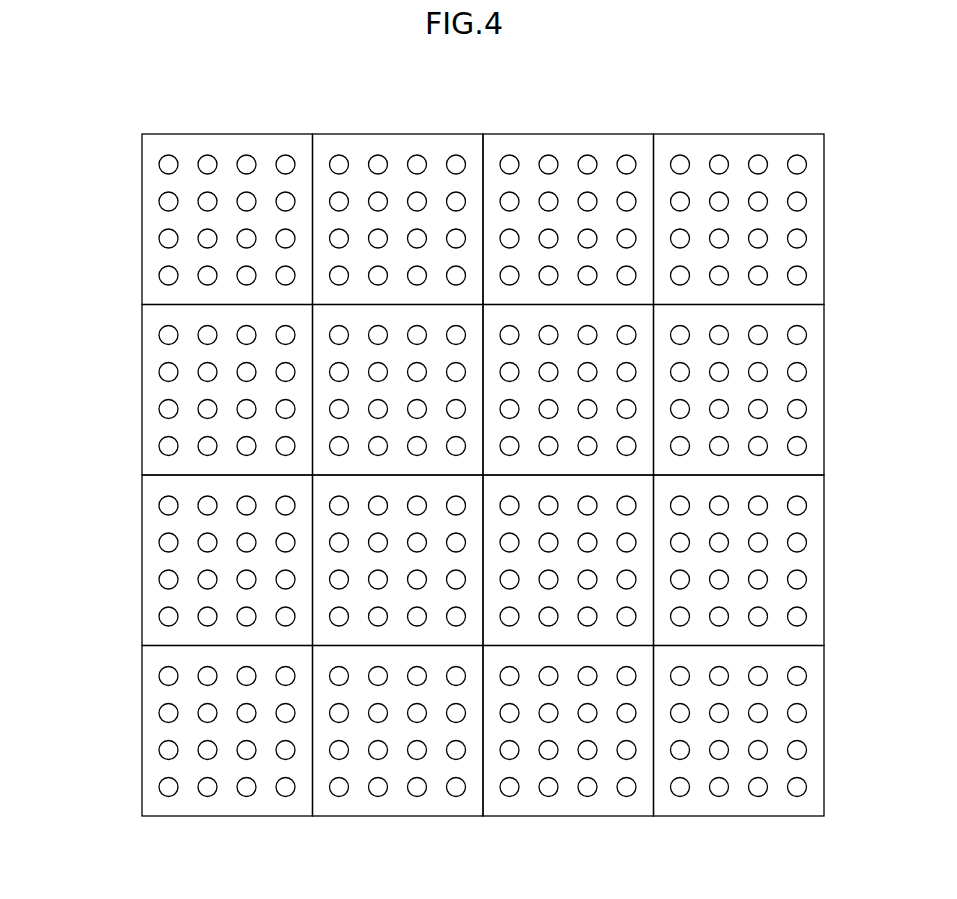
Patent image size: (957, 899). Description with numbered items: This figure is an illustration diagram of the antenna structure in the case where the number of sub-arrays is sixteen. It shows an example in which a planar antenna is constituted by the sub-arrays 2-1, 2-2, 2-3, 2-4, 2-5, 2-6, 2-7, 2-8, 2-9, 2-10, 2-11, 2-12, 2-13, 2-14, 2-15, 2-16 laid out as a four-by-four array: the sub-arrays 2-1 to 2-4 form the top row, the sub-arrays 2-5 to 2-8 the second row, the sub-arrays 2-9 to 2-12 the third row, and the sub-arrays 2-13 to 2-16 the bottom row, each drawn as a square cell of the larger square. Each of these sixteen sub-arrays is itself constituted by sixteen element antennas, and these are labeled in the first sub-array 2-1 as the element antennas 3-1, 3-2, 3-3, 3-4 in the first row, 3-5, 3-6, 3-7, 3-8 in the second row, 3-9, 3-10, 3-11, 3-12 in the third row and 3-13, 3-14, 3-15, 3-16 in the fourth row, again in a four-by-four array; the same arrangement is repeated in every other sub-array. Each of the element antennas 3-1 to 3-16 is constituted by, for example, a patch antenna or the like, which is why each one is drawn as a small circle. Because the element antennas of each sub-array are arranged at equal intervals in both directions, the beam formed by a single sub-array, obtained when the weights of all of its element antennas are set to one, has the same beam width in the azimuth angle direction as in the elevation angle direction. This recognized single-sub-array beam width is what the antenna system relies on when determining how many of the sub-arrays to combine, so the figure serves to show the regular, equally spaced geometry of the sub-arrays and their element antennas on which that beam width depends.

The sub-array 2-1 is at (263, 219).
The sub-array 2-2 is at (392, 143).
The sub-array 2-3 is at (562, 140).
The sub-array 2-4 is at (745, 140).
The sub-array 2-5 is at (150, 415).
The sub-array 2-6 is at (327, 462).
The sub-array 2-7 is at (630, 353).
The sub-array 2-8 is at (813, 392).
The sub-array 2-9 is at (152, 528).
The sub-array 2-10 is at (327, 597).
The sub-array 2-11 is at (630, 522).
The sub-array 2-12 is at (813, 560).
The sub-array 2-13 is at (225, 802).
The sub-array 2-14 is at (398, 802).
The sub-array 2-15 is at (571, 802).
The sub-array 2-16 is at (740, 802).
The element antenna 3-1 is at (159, 164).
The element antenna 3-2 is at (204, 156).
The element antenna 3-3 is at (245, 156).
The element antenna 3-4 is at (285, 155).
The element antenna 3-5 is at (160, 201).
The element antenna 3-6 is at (199, 208).
The element antenna 3-7 is at (249, 193).
The element antenna 3-8 is at (288, 193).
The element antenna 3-9 is at (159, 238).
The element antenna 3-10 is at (199, 245).
The element antenna 3-11 is at (253, 234).
The element antenna 3-12 is at (293, 235).
The element antenna 3-13 is at (160, 278).
The element antenna 3-14 is at (201, 282).
The element antenna 3-15 is at (241, 283).
The element antenna 3-16 is at (282, 284).